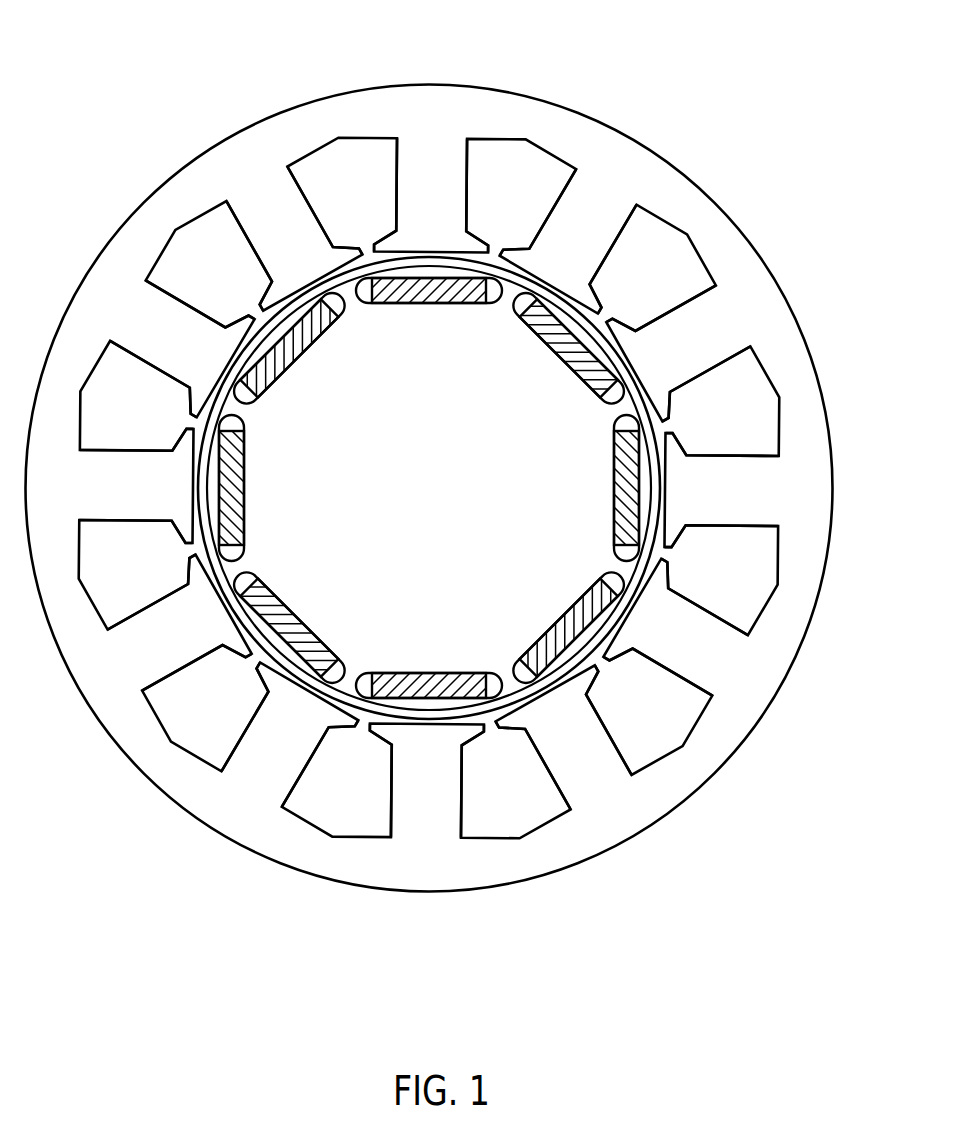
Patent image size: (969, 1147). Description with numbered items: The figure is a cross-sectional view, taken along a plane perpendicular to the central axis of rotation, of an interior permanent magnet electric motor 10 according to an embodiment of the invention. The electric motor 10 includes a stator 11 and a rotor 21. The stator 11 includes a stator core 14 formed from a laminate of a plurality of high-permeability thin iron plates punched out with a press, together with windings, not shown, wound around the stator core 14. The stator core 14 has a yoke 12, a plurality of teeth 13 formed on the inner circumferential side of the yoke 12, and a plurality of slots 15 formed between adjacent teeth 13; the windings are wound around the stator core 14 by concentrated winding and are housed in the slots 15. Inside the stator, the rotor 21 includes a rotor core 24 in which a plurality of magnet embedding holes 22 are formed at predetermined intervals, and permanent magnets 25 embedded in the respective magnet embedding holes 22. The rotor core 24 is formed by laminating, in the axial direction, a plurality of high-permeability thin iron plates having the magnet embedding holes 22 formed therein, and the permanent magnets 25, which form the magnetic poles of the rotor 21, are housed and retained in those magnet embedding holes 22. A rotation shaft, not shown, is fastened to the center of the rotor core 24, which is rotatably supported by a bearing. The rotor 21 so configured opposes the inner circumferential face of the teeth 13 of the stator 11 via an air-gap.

The interior permanent magnet electric motor 10 is at (103, 128).
The stator 11 is at (640, 142).
The yoke 12 is at (698, 225).
The teeth 13 is at (680, 640).
The stator core 14 is at (747, 305).
The slots 15 is at (635, 735).
The rotor 21 is at (432, 340).
The magnet embedding holes 22 is at (240, 397).
The rotor core 24 is at (350, 383).
The permanent magnets 25 is at (420, 682).